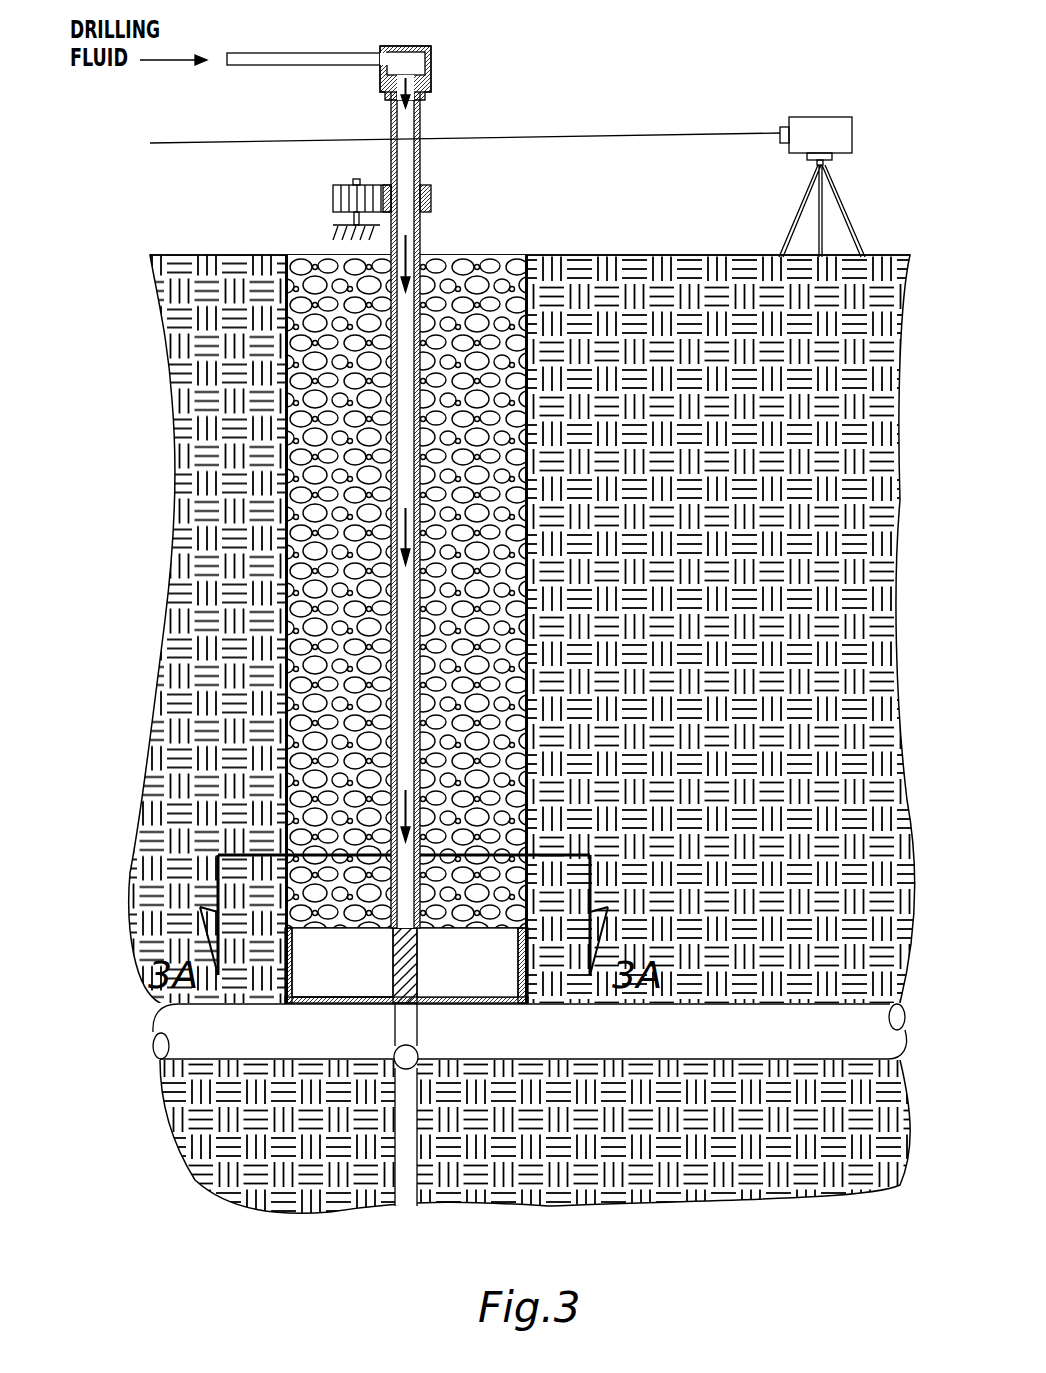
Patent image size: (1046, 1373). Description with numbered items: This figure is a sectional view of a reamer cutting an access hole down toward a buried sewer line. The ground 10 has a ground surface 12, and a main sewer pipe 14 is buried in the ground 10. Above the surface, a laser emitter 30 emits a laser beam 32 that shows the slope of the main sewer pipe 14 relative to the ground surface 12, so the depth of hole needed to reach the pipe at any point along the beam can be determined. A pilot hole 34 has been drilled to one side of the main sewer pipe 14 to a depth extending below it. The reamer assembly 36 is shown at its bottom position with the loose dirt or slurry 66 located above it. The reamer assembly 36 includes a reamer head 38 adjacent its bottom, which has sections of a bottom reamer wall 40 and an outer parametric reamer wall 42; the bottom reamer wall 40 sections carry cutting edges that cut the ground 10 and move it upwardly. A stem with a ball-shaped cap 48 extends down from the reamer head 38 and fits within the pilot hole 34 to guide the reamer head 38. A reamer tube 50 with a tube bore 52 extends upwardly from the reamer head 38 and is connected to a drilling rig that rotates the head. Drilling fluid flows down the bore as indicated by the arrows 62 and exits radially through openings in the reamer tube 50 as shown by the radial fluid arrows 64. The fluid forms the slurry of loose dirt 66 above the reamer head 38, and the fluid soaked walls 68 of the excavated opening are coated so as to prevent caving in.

The ground 10 is at (188, 515).
The ground surface 12 is at (720, 257).
The main sewer pipe 14 is at (155, 1037).
The laser emitter 30 is at (838, 116).
The laser beam 32 is at (628, 135).
The pilot hole 34 is at (398, 1195).
The reamer assembly 36 is at (372, 114).
The reamer head 38 is at (301, 986).
The bottom reamer wall 40 is at (378, 996).
The parametric reamer wall 42 is at (517, 985).
The ball-shaped cap 48 is at (393, 1054).
The reamer tube 50 is at (370, 603).
The tube bore 52 is at (418, 955).
The drilling fluid arrows 62 is at (398, 62).
The radial fluid arrows 64 is at (358, 920).
The loose dirt or slurry 66 is at (318, 262).
The fluid soaked walls 68 is at (290, 262).